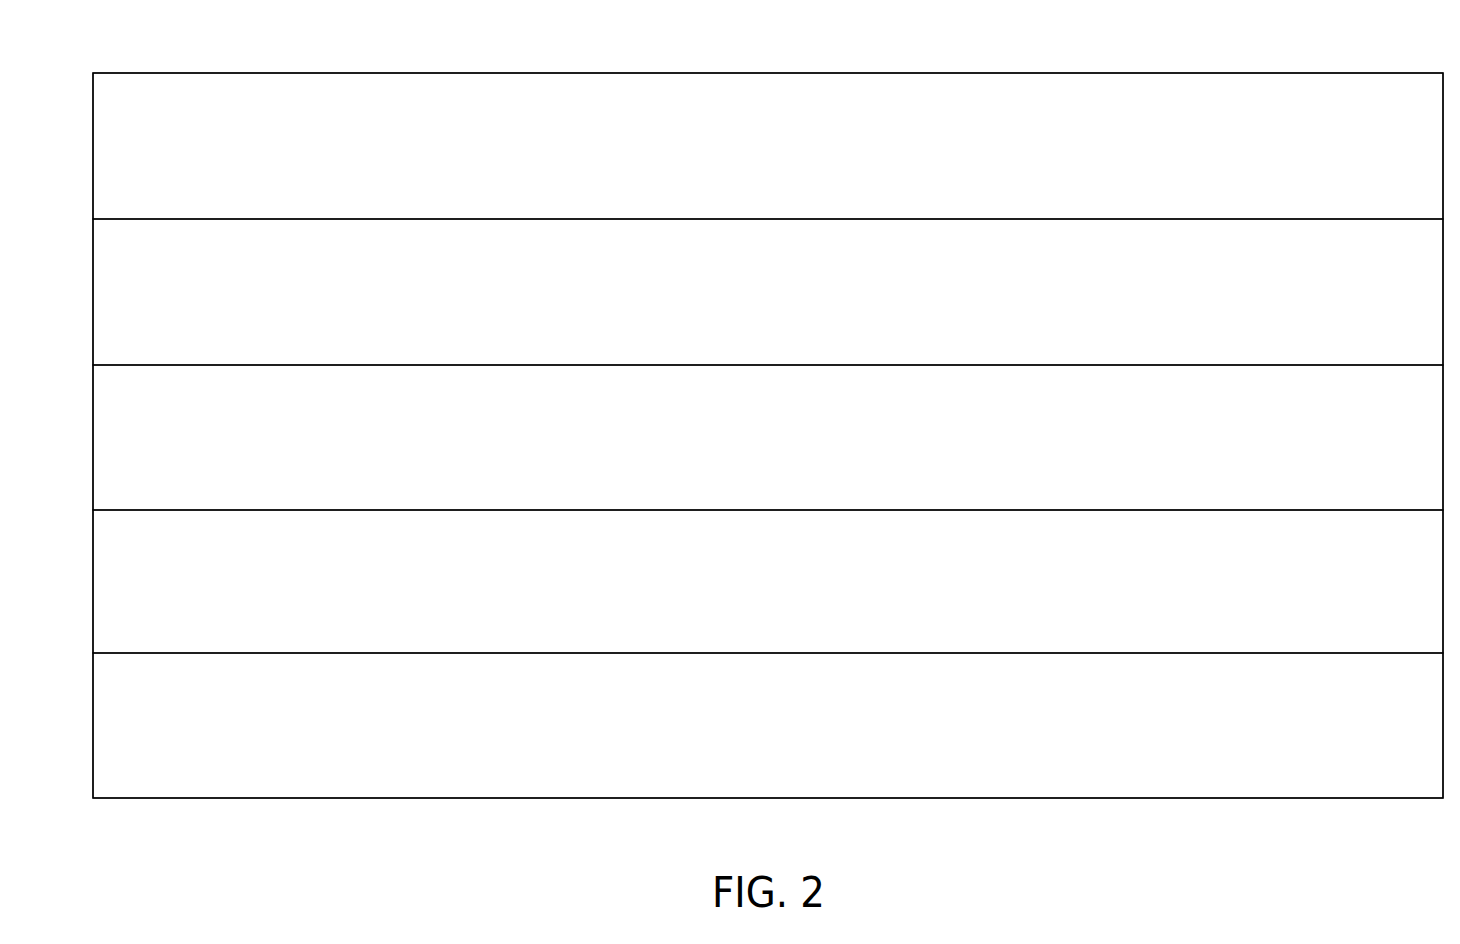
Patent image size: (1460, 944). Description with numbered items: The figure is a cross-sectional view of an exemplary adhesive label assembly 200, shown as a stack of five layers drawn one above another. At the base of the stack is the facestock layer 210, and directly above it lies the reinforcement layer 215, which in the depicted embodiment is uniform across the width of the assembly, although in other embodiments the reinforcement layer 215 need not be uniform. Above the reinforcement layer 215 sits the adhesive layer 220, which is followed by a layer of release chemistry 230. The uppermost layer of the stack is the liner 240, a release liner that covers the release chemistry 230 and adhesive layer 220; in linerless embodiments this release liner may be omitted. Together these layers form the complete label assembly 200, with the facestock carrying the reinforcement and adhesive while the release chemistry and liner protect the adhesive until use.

The label assembly 200 is at (250, 57).
The liner 240 is at (768, 146).
The release chemistry 230 is at (768, 292).
The adhesive layer 220 is at (768, 437).
The reinforcement layer 215 is at (768, 581).
The facestock layer 210 is at (768, 725).